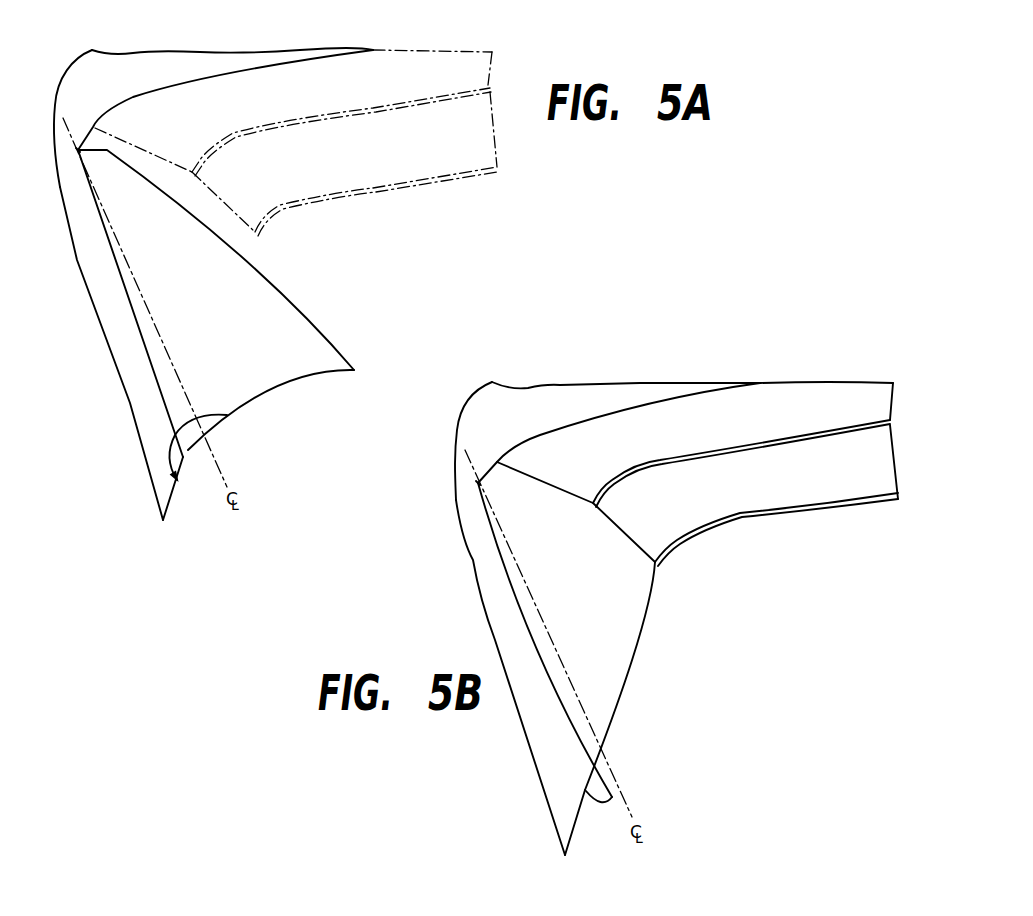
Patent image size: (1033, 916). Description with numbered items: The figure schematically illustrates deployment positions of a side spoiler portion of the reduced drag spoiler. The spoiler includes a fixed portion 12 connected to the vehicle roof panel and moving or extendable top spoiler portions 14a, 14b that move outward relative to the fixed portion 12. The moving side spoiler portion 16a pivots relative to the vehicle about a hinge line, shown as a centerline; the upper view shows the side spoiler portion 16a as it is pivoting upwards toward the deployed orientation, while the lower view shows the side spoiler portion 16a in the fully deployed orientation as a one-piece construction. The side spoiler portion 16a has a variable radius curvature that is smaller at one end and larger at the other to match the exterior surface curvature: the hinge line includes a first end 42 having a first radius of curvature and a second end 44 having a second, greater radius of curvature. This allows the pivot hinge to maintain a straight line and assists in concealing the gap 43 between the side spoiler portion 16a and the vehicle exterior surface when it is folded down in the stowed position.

In FIG. 5A, the fixed portion 12 is at (146, 72).
In FIG. 5B, the fixed portion 12 is at (548, 403).
In FIG. 5B, the extendable top spoiler portion 14a is at (707, 412).
In FIG. 5B, the extendable top spoiler portion 14b is at (845, 455).
In FIG. 5A, the side spoiler portion 16a is at (273, 360).
In FIG. 5B, the side spoiler portion 16a is at (598, 623).
In FIG. 5A, the first end 42 is at (78, 150).
In FIG. 5B, the first end 42 is at (478, 483).
In FIG. 5A, the gap 43 is at (143, 352).
In FIG. 5B, the gap 43 is at (518, 612).
In FIG. 5A, the second end 44 is at (188, 450).
In FIG. 5B, the second end 44 is at (593, 800).